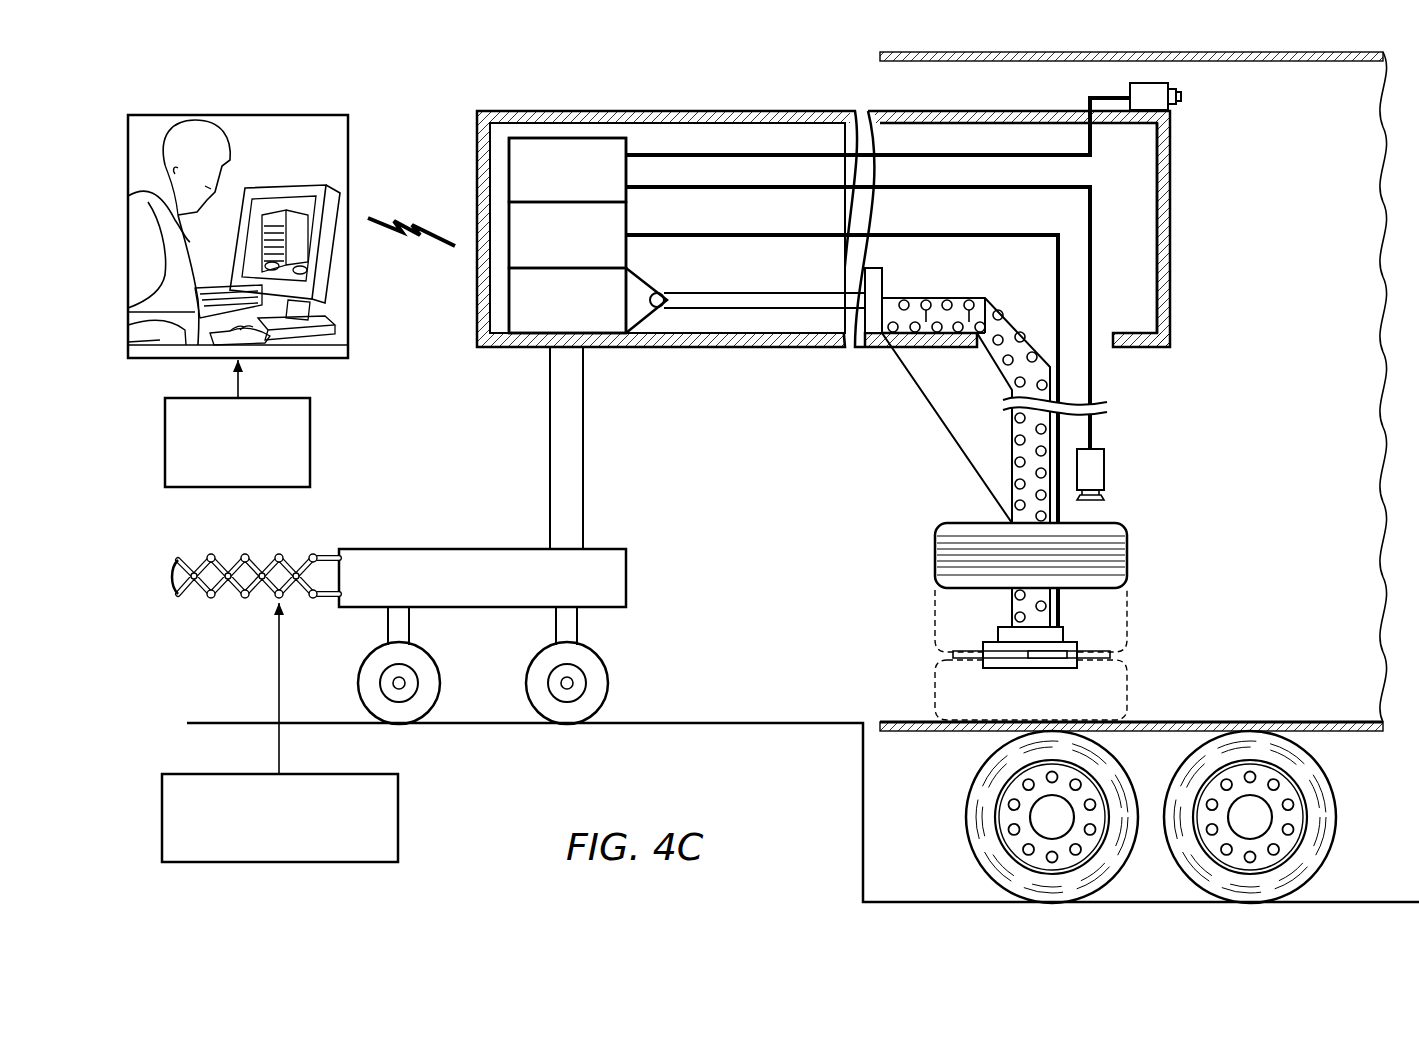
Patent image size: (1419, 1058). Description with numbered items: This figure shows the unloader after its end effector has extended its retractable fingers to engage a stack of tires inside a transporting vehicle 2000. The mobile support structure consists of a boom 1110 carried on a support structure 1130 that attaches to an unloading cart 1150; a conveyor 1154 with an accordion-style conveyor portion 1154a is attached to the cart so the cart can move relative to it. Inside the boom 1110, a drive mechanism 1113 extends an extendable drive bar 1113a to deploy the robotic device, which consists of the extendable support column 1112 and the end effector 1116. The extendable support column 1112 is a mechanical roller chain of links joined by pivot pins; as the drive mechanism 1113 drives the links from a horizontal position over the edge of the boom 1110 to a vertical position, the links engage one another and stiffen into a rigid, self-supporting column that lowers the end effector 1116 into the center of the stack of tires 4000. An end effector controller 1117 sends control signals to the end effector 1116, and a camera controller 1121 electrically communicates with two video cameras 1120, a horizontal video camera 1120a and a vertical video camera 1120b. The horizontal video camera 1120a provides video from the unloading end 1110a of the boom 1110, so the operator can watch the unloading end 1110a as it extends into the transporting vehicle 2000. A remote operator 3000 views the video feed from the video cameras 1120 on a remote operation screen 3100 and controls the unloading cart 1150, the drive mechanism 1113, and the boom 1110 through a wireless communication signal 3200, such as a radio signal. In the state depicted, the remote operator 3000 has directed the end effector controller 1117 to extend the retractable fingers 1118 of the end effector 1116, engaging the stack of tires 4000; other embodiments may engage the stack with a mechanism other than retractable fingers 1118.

The remote operator 3000 is at (238, 301).
The remote operation screen 3100 is at (270, 208).
The wireless communication signal 3200 is at (410, 243).
The transporting vehicle 2000 is at (876, 57).
The boom 1110 is at (840, 342).
The unloading end of the boom 1110a is at (1174, 237).
The camera controller 1121 is at (612, 136).
The end effector controller 1117 is at (520, 220).
The drive mechanism 1113 is at (528, 340).
The extendable drive bar 1113a is at (722, 307).
The video cameras 1120 is at (1112, 288).
The horizontal video camera 1120a is at (1128, 94).
The vertical video camera 1120b is at (1106, 465).
The extendable support column 1112 is at (1009, 447).
The stack of tires 4000 is at (1142, 623).
The end effector 1116 is at (1078, 678).
The retractable fingers 1118 is at (1038, 665).
The support structure 1130 is at (586, 457).
The unloading cart 1150 is at (465, 543).
The conveyor 1154 is at (280, 708).
The accordion-style conveyor portion 1154a is at (255, 576).